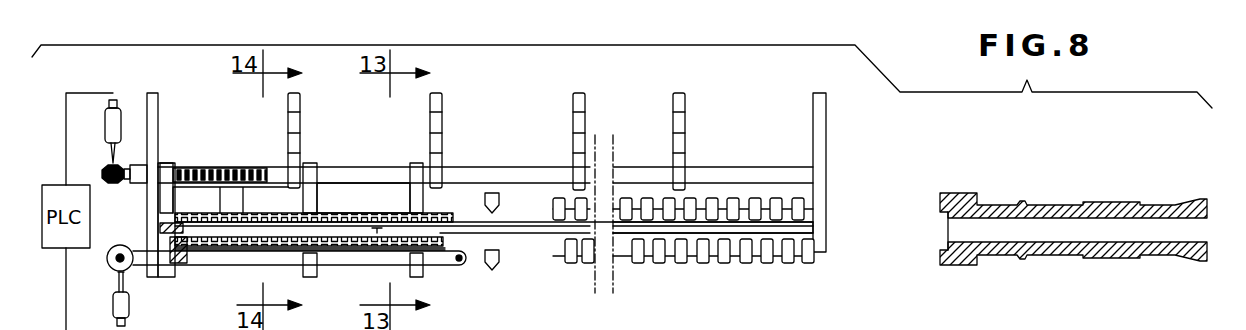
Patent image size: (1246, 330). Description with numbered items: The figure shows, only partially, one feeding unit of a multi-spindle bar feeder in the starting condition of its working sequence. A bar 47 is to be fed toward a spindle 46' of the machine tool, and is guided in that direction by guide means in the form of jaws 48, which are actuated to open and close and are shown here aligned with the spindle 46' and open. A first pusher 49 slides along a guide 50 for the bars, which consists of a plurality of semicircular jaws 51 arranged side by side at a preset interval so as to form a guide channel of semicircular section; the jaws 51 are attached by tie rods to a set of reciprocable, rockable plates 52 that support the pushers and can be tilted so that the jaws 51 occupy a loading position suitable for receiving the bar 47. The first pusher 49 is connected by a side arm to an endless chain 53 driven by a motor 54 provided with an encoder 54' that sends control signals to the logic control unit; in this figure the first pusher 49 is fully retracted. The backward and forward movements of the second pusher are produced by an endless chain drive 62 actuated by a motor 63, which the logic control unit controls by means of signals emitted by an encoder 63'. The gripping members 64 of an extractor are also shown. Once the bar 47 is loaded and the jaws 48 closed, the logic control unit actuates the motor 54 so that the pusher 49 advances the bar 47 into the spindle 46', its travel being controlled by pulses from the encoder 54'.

The encoder 63' is at (133, 78).
The motor 63 is at (87, 145).
The first pusher 49 is at (186, 218).
The endless chain drive 62 is at (215, 170).
The reciprocable plates 52 is at (167, 198).
The guide 50 is at (380, 197).
The motor 54 is at (78, 295).
The encoder 54' is at (147, 310).
The endless chain 53 is at (212, 267).
The semicircular jaws 51 is at (342, 246).
The gripping members 64 is at (489, 270).
The bar 47 is at (525, 230).
The jaws 48 is at (745, 260).
The spindle 46' is at (1073, 206).